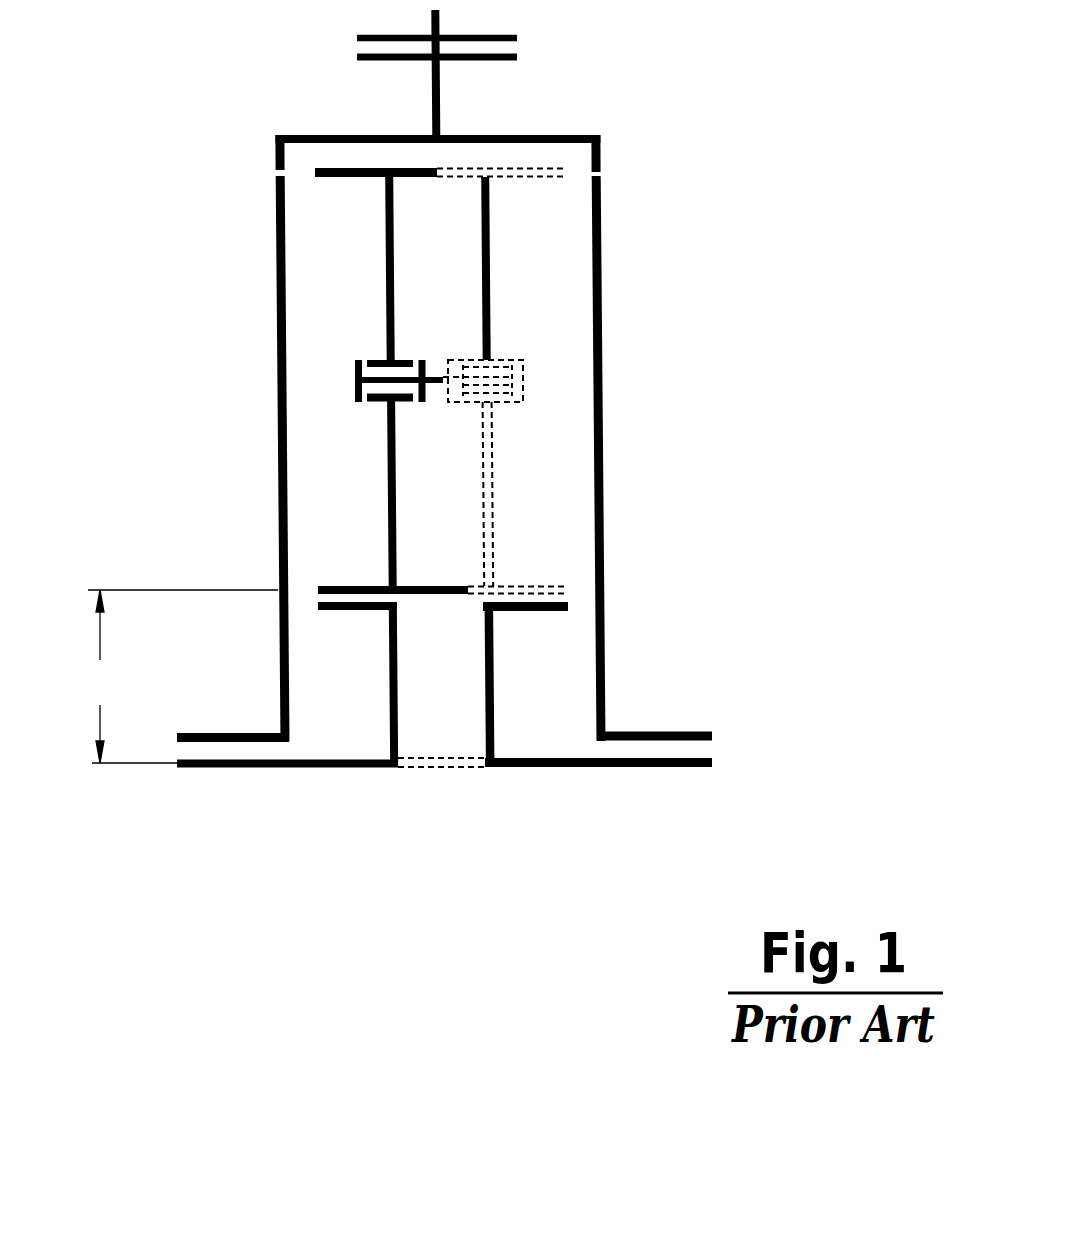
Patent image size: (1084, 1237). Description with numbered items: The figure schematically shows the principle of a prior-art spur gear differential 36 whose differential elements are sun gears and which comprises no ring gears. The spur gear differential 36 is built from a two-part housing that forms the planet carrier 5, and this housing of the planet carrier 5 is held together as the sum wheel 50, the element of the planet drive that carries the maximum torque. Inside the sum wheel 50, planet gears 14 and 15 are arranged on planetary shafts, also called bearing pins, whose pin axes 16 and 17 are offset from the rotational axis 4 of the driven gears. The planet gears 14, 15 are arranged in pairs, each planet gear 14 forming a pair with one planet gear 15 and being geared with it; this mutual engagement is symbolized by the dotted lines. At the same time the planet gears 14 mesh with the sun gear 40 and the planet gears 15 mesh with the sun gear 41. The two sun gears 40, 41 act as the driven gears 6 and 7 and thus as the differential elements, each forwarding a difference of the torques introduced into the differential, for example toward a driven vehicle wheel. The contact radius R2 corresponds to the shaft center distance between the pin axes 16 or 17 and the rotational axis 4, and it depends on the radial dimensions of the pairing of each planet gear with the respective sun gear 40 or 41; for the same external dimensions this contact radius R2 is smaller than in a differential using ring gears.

The spur gear differential 36 is at (507, 443).
The planet carrier 5 is at (450, 449).
The sum wheel 50 is at (602, 295).
The planet gear 14 is at (387, 494).
The planet gear 15 is at (493, 493).
The pin axis 16 is at (378, 395).
The pin axis 17 is at (500, 380).
The sun gear 40 is at (352, 610).
The sun gear 41 is at (535, 611).
The driven gear 6 is at (390, 712).
The driven gear 7 is at (493, 712).
The rotational axis 4 is at (442, 767).
The contact radius R2 is at (180, 676).